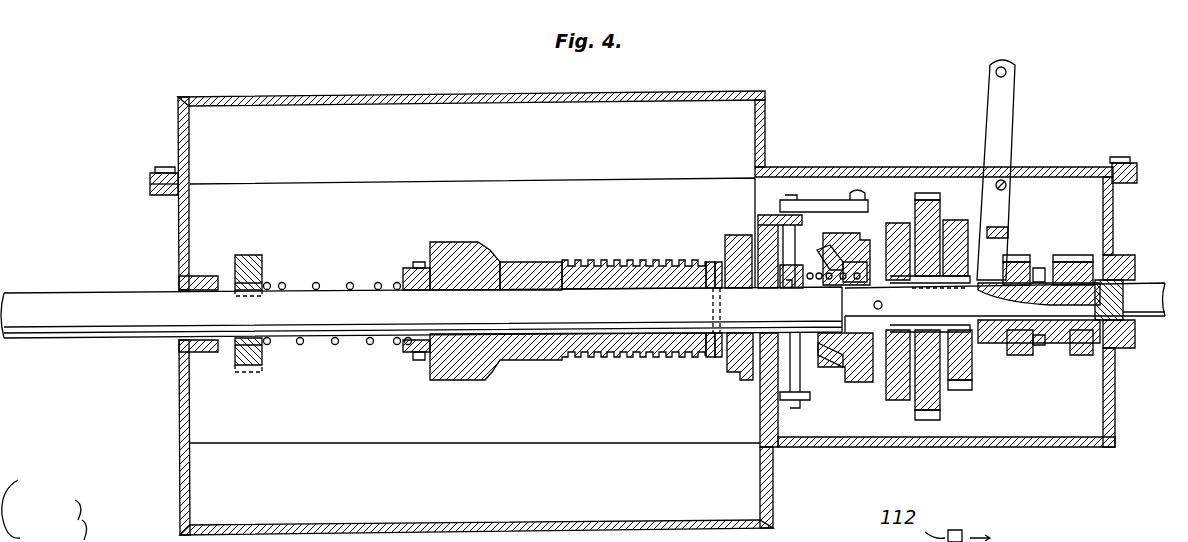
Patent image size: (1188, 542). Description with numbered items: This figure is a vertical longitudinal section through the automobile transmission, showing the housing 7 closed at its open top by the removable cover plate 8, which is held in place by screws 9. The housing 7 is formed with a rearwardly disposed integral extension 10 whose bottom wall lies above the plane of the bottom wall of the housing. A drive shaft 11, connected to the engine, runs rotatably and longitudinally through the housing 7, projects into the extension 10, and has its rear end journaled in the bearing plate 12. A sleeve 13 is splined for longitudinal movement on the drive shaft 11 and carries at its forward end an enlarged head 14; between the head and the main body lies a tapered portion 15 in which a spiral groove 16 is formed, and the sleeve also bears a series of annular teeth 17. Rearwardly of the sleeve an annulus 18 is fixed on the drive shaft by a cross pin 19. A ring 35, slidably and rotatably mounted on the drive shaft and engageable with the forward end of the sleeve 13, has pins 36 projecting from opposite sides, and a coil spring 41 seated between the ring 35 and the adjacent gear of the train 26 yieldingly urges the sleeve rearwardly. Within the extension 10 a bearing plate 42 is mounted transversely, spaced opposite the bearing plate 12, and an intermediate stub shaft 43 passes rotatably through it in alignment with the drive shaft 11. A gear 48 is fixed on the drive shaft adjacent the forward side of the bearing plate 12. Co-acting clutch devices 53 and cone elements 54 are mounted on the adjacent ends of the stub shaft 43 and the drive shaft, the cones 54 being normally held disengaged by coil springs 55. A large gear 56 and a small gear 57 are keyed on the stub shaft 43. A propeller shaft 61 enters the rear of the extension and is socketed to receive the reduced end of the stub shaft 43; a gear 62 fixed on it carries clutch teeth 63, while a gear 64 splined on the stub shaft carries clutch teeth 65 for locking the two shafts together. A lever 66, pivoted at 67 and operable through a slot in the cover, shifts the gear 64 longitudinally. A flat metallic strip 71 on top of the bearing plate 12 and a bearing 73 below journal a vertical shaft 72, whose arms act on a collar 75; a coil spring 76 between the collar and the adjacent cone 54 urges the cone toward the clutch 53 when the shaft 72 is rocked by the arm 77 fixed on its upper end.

The housing 7 is at (141, 171).
The removable cover plate 8 is at (718, 92).
The screws 9 is at (160, 167).
The integral extension 10 is at (1040, 437).
The drive shaft 11 is at (90, 297).
The bearing plate 12 is at (760, 406).
The sleeve 13 is at (540, 356).
The enlarged head 14 is at (450, 243).
The tapered portion 15 is at (531, 256).
The spiral groove 16 is at (490, 252).
The annular teeth 17 is at (620, 261).
The annulus 18 is at (702, 262).
The cross pin 19 is at (712, 262).
The gear train 26 is at (248, 257).
The ring 35 is at (408, 352).
The pins 36 is at (418, 262).
The coil spring 41 is at (300, 346).
The bearing plate 42 is at (900, 420).
The intermediate stub shaft 43 is at (987, 309).
The gear 48 is at (726, 376).
The clutch device 53 is at (855, 236).
The clutch cone 54 is at (845, 372).
The coil springs 55 is at (869, 389).
The large gear 56 is at (940, 414).
The small gear 57 is at (962, 380).
The propeller shaft 61 is at (1148, 286).
The gear 62 is at (1108, 256).
The clutch teeth 63 is at (1072, 258).
The gear 64 is at (1015, 258).
The clutch teeth 65 is at (1040, 268).
The lever 66 is at (994, 108).
The pivot 67 is at (1005, 182).
The flat metallic strip 71 is at (760, 206).
The vertically disposed shaft 72 is at (800, 238).
The bearing 73 is at (806, 402).
The collar 75 is at (790, 290).
The coil spring 76 is at (790, 385).
The arm 77 is at (826, 200).